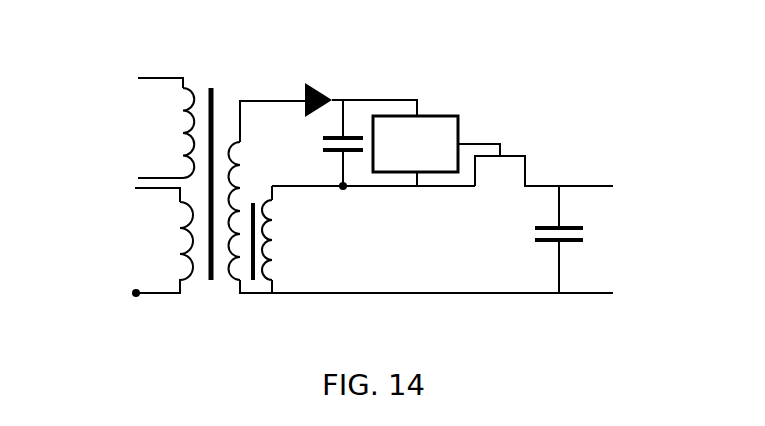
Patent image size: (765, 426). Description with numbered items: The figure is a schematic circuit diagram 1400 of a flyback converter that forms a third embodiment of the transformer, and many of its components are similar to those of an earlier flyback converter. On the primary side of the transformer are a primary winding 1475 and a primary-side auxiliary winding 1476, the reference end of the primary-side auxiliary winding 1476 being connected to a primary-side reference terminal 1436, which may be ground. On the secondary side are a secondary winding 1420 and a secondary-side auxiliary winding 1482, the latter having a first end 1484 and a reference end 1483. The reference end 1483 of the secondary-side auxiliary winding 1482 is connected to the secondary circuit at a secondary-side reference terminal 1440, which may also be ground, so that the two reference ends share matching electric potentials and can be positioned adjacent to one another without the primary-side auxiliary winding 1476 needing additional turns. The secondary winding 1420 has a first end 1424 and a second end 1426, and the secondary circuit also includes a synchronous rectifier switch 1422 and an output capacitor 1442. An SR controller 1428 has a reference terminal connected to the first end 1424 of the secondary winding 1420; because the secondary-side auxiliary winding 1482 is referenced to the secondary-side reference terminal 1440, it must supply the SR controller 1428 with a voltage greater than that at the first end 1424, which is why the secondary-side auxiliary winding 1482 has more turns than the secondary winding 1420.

The schematic circuit diagram 1400 is at (286, 64).
The first primary winding 1475 is at (181, 128).
The primary-side auxiliary winding 1476 is at (181, 243).
The primary-side reference terminal 1436 is at (135, 297).
The secondary-side auxiliary winding 1482 is at (233, 182).
The first terminal of secondary winding 1484 is at (237, 112).
The reference end 1483 is at (240, 281).
The secondary winding 1420 is at (270, 245).
The first end 1424 is at (275, 198).
The second terminal of auxiliary winding 1426 is at (272, 294).
The SR controller 1428 is at (441, 127).
The synchronous rectifier switch 1422 is at (526, 170).
The output capacitor 1442 is at (590, 187).
The secondary-side reference terminal 1440 is at (580, 294).